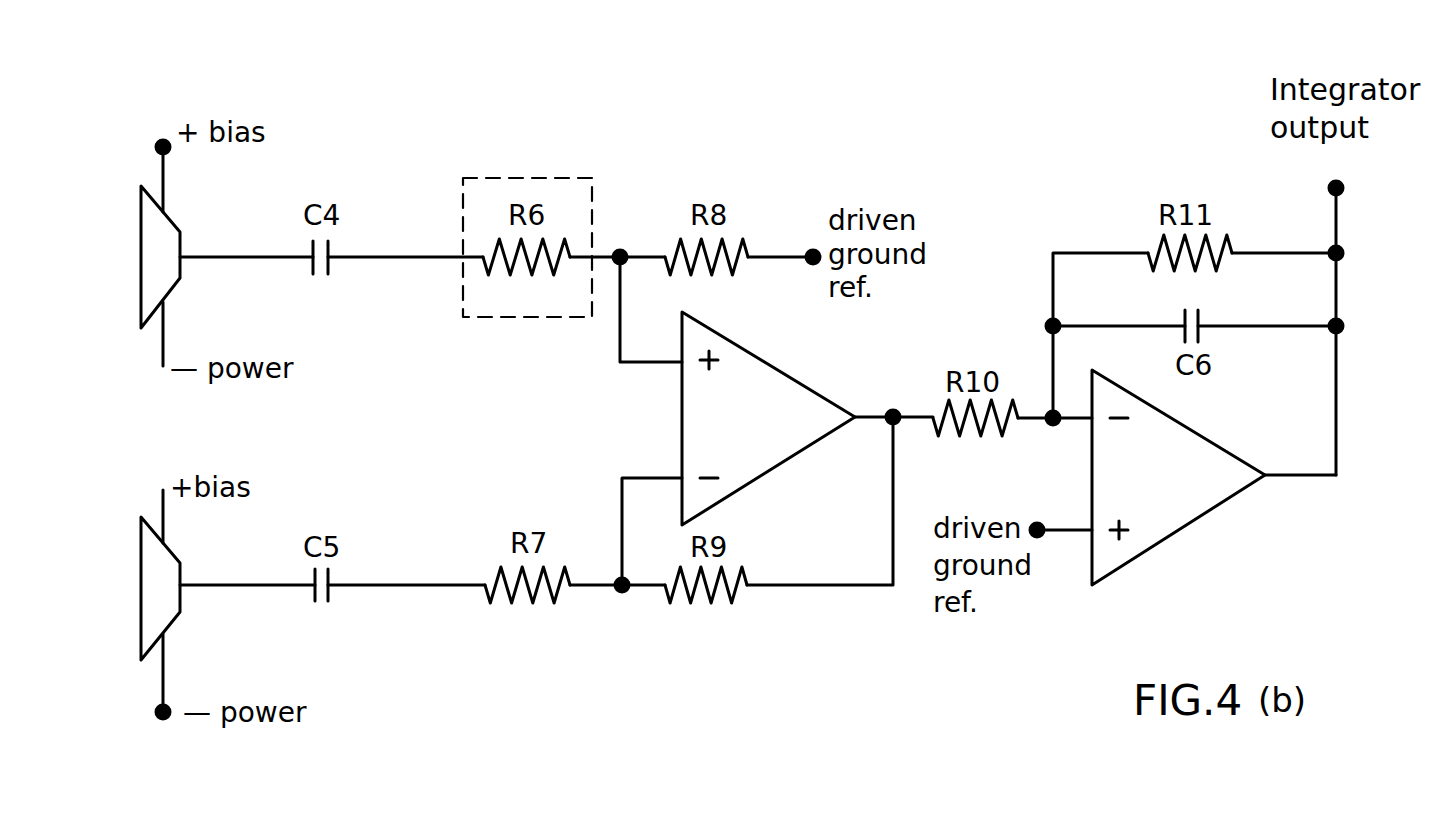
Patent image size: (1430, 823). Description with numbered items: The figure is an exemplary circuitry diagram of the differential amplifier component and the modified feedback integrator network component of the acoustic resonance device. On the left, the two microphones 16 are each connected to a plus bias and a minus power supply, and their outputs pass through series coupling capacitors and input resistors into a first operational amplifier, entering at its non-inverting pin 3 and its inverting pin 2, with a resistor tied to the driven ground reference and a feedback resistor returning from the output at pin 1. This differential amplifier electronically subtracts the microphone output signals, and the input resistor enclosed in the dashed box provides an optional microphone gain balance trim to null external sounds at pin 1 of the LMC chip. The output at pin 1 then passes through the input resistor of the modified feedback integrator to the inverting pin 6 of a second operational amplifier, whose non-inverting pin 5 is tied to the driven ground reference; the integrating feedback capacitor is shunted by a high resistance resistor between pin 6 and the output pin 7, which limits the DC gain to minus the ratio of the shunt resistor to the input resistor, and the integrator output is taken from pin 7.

The microphones 16 is at (142, 302).
The pin 1 of the LMC6484 chip 1 is at (894, 401).
The first op-amp inverting input pin 2 is at (652, 531).
The first op-amp non-inverting input pin 3 is at (651, 309).
The second op-amp non-inverting input pin 5 is at (1061, 515).
The second op-amp inverting input pin 6 is at (1055, 402).
The second op-amp output pin 7 is at (1300, 456).